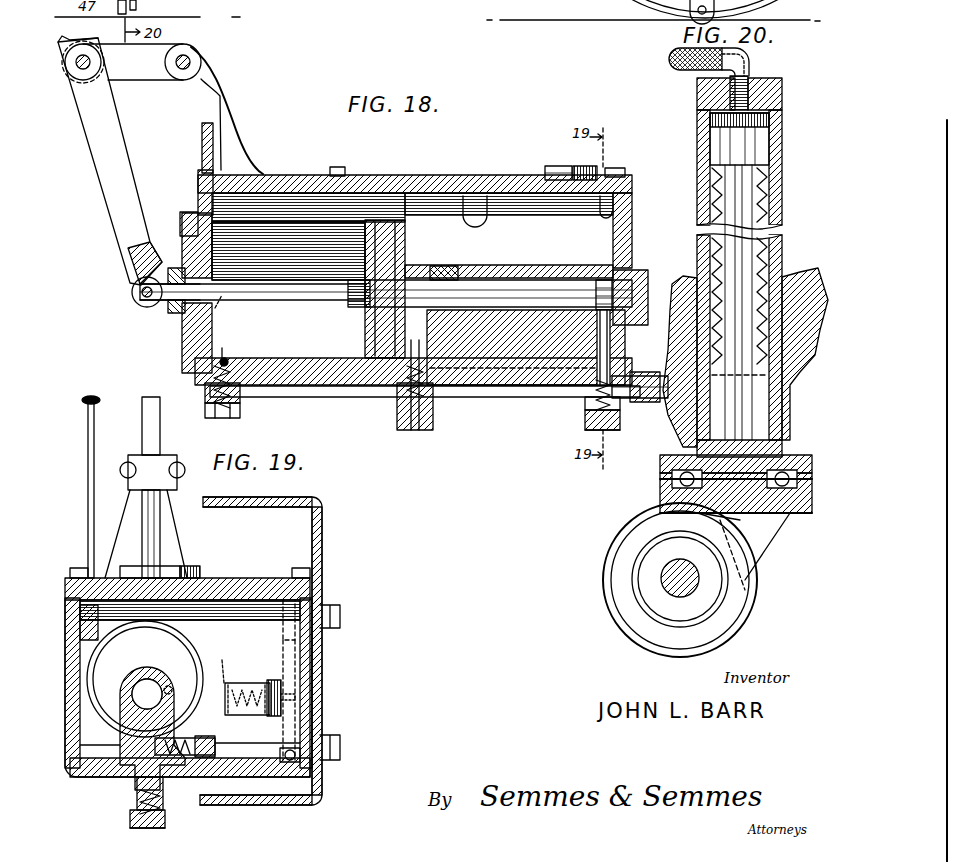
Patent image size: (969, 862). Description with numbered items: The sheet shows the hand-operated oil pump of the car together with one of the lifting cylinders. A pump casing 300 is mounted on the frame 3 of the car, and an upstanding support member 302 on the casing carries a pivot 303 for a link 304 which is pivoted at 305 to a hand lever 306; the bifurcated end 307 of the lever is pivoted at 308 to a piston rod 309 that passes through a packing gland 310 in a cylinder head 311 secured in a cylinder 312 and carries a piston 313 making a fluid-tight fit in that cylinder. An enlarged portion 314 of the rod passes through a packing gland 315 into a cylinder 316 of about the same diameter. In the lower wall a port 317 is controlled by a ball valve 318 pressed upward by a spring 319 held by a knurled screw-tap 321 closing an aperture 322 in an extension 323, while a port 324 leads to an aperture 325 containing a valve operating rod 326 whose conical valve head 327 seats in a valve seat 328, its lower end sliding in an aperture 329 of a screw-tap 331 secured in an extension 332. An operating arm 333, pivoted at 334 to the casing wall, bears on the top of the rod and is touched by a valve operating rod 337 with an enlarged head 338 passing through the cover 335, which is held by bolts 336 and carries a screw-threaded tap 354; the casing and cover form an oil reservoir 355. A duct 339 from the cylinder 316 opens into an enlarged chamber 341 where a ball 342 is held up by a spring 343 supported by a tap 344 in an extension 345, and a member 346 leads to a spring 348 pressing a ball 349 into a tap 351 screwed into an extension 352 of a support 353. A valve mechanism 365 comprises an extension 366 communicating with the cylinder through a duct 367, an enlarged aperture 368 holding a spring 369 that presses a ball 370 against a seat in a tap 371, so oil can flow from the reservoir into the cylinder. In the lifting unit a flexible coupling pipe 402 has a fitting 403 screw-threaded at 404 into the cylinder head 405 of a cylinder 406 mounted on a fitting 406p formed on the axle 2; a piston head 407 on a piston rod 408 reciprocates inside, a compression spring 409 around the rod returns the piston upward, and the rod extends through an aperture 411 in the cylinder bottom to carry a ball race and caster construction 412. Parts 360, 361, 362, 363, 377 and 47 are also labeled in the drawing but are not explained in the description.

In FIG. 18, the pump casing 300 is at (444, 185).
In FIG. 19, the pump casing 300 is at (65, 672).
In FIG. 18, the upstanding support member 302 is at (237, 107).
In FIG. 18, the pivot 303 is at (196, 58).
In FIG. 18, the link 304 is at (156, 78).
In FIG. 18, the pivot 305 is at (78, 78).
In FIG. 18, the hand lever 306 is at (112, 200).
In FIG. 18, the bifurcated end 307 is at (135, 285).
In FIG. 18, the pivot 308 is at (140, 300).
In FIG. 18, the piston rod 309 is at (282, 303).
In FIG. 18, the packing gland 310 is at (176, 266).
In FIG. 18, the cylinder head 311 is at (188, 212).
In FIG. 18, the cylinder 312 is at (283, 200).
In FIG. 19, the cylinder 312 is at (205, 650).
In FIG. 18, the piston 313 is at (388, 198).
In FIG. 18, the enlarged portion 314 is at (462, 278).
In FIG. 18, the packing gland 315 is at (446, 266).
In FIG. 18, the cylinder 316 is at (603, 278).
In FIG. 19, the cylinder 316 is at (147, 679).
In FIG. 18, the port 317 is at (225, 355).
In FIG. 18, the ball valve 318 is at (230, 360).
In FIG. 18, the spring 319 is at (208, 395).
In FIG. 18, the knurled screw-tap 321 is at (222, 418).
In FIG. 18, the aperture 322 is at (205, 390).
In FIG. 18, the extension 323 is at (240, 405).
In FIG. 18, the port 324 is at (320, 390).
In FIG. 18, the aperture 325 is at (432, 398).
In FIG. 18, the valve operating rod 326 is at (433, 425).
In FIG. 18, the conical valve head 327 is at (395, 385).
In FIG. 18, the valve seat 328 is at (518, 360).
In FIG. 18, the aperture 329 is at (405, 428).
In FIG. 18, the knurled screw-tap 331 is at (412, 430).
In FIG. 18, the extension 332 is at (397, 415).
In FIG. 18, the operating arm 333 is at (405, 345).
In FIG. 19, the operating arm 333 is at (80, 745).
In FIG. 19, the pivot 334 is at (300, 757).
In FIG. 18, the cover 335 is at (500, 190).
In FIG. 19, the cover 335 is at (210, 580).
In FIG. 18, the bolts 336 is at (337, 167).
In FIG. 19, the bolts 336 is at (75, 568).
In FIG. 19, the valve operating rod 337 is at (88, 517).
In FIG. 19, the enlarged head 338 is at (82, 400).
In FIG. 18, the duct 339 is at (648, 292).
In FIG. 19, the duct 339 is at (118, 716).
In FIG. 18, the enlarged chamber 341 is at (595, 395).
In FIG. 19, the enlarged chamber 341 is at (137, 800).
In FIG. 19, the ball 342 is at (150, 770).
In FIG. 18, the spring 343 is at (598, 430).
In FIG. 19, the spring 343 is at (130, 822).
In FIG. 18, the knurled screw-threaded tap 344 is at (600, 420).
In FIG. 19, the knurled screw-threaded tap 344 is at (160, 830).
In FIG. 18, the extension 345 is at (620, 430).
In FIG. 19, the extension 345 is at (165, 810).
In FIG. 18, the member 346 is at (612, 342).
In FIG. 19, the member 346 is at (160, 690).
In FIG. 19, the spring 348 is at (165, 778).
In FIG. 19, the ball 349 is at (195, 778).
In FIG. 19, the knurled screw-threaded tap 351 is at (218, 742).
In FIG. 19, the extension 352 is at (184, 696).
In FIG. 18, the support 353 is at (522, 398).
In FIG. 19, the support 353 is at (120, 745).
In FIG. 18, the knurled screw-threaded tap 354 is at (558, 170).
In FIG. 19, the knurled screw-threaded tap 354 is at (112, 575).
In FIG. 18, the reservoir 355 is at (518, 190).
In FIG. 19, the reservoir 355 is at (228, 600).
In FIG. 18, the rod 360 is at (525, 398).
In FIG. 19, the rod 360 is at (135, 783).
In FIG. 18, the guide 361 is at (596, 388).
In FIG. 18, the bolt 362 is at (638, 376).
In FIG. 18, the nut 363 is at (645, 402).
In FIG. 18, the valve mechanism 365 is at (226, 310).
In FIG. 19, the valve mechanism 365 is at (280, 676).
In FIG. 19, the extension 366 is at (275, 621).
In FIG. 19, the duct 367 is at (223, 659).
In FIG. 19, the enlarged aperture 368 is at (262, 683).
In FIG. 18, the spring 369 is at (645, 365).
In FIG. 19, the spring 369 is at (238, 683).
In FIG. 19, the ball 370 is at (252, 716).
In FIG. 19, the knurled screw-threaded tap 371 is at (283, 700).
In FIG. 19, the boss 377 is at (305, 686).
In FIG. 19, the frame 3 is at (322, 497).
In FIG. 20, the axle 2 is at (826, 306).
In FIG. 20, the wheel 47 is at (745, 606).
In FIG. 20, the flexible coupling pipe 402 is at (676, 58).
In FIG. 20, the fitting 403 is at (752, 54).
In FIG. 20, the screw-thread 404 is at (750, 80).
In FIG. 20, the cylinder head 405 is at (782, 86).
In FIG. 20, the cylinder 406 is at (782, 178).
In FIG. 20, the fitting 406p is at (815, 385).
In FIG. 20, the piston head 407 is at (769, 140).
In FIG. 20, the piston rod 408 is at (752, 212).
In FIG. 20, the compression spring 409 is at (768, 265).
In FIG. 20, the aperture 411 is at (810, 432).
In FIG. 20, the ball race and caster construction 412 is at (782, 513).